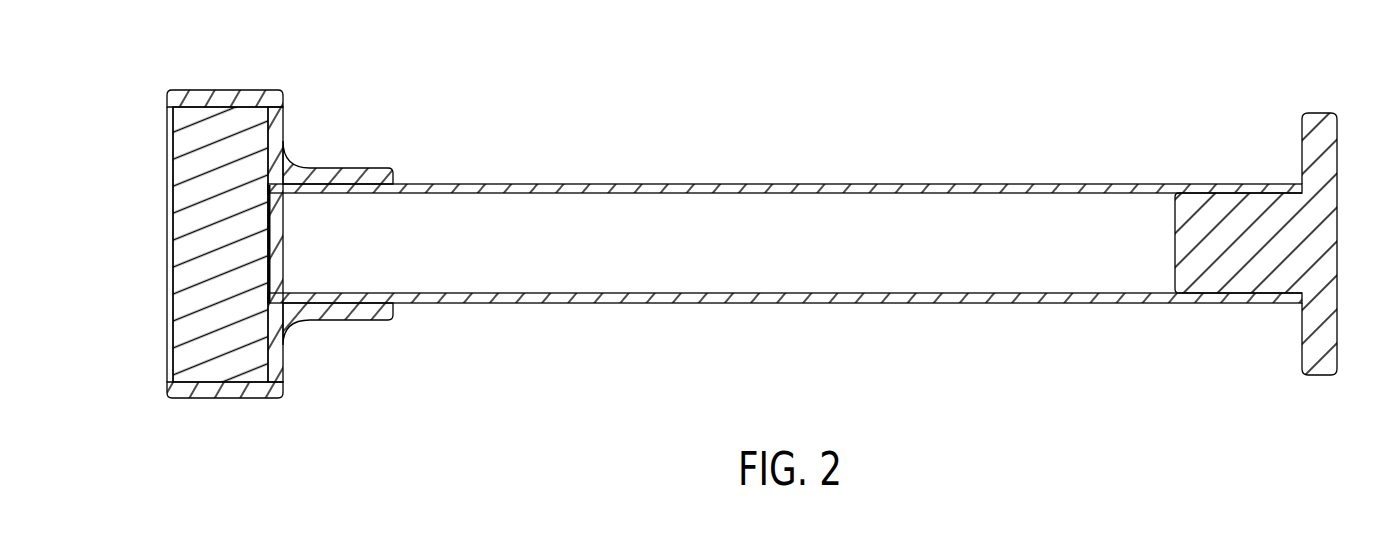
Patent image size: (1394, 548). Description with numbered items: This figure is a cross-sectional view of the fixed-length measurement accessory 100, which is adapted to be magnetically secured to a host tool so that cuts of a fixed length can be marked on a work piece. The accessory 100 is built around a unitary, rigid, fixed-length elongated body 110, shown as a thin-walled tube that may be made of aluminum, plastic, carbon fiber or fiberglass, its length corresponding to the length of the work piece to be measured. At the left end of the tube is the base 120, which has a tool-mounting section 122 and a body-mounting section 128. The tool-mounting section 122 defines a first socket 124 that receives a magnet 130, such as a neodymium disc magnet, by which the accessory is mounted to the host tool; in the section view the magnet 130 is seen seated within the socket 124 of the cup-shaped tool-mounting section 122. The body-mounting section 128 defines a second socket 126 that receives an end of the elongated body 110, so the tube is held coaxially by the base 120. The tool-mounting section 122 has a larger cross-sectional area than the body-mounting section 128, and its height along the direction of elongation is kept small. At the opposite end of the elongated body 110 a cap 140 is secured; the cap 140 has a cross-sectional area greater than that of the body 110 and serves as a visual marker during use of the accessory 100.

The fixed-length measurement accessory 100 is at (516, 111).
The elongated body 110 is at (690, 187).
The base 120 is at (298, 175).
The tool-mounting section 122 is at (193, 387).
The first socket 124 is at (208, 375).
The second socket 126 is at (338, 291).
The body-mounting section 128 is at (322, 308).
The magnet 130 is at (185, 225).
The cap 140 is at (1323, 128).